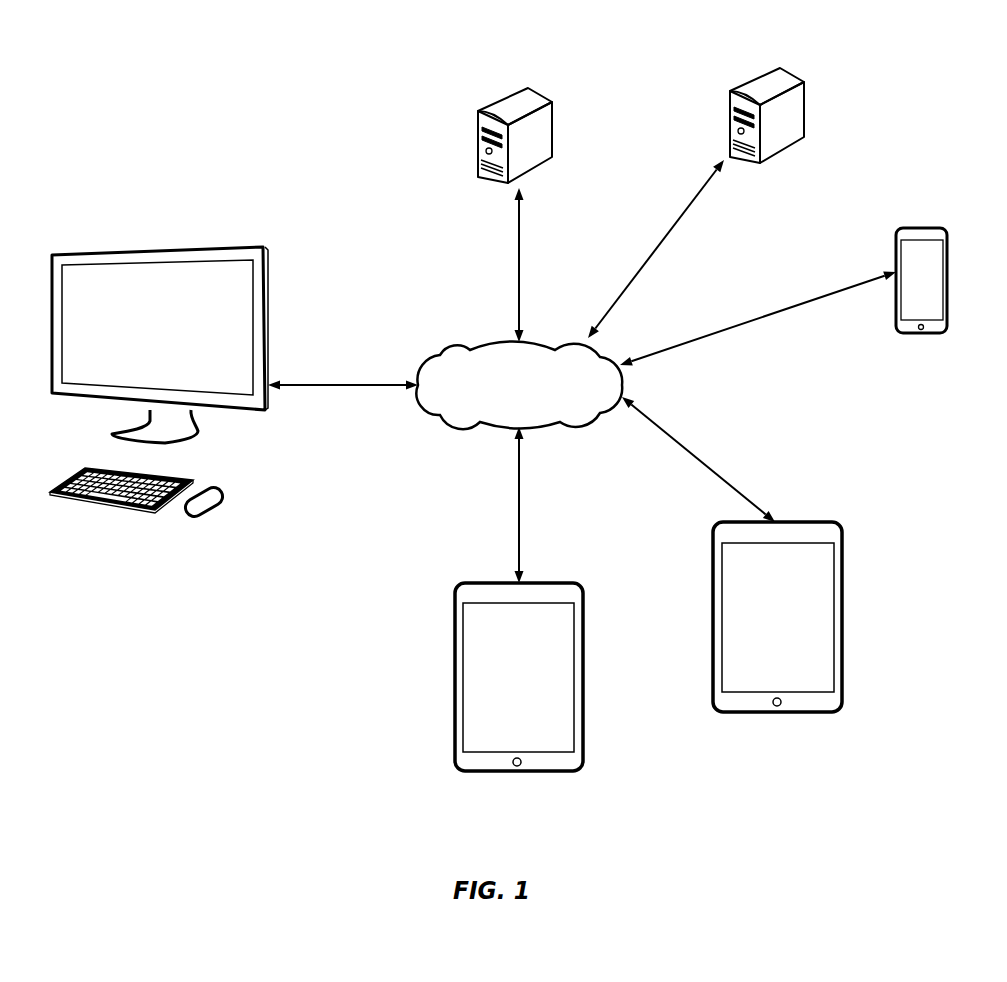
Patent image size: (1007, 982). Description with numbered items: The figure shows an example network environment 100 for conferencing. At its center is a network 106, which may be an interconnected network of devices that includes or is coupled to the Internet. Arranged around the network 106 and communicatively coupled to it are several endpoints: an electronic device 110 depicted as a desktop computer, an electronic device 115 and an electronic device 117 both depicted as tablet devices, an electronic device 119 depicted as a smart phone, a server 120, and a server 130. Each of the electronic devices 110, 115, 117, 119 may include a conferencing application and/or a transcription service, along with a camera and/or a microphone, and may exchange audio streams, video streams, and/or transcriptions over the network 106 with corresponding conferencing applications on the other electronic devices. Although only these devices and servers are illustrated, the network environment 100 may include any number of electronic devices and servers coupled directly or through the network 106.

The network environment 100 is at (36, 170).
The electronic device 110 is at (148, 545).
The network 106 is at (449, 357).
The server 120 is at (500, 97).
The server 130 is at (752, 78).
The electronic device 119 is at (921, 334).
The electronic device 117 is at (777, 713).
The electronic device 115 is at (517, 773).